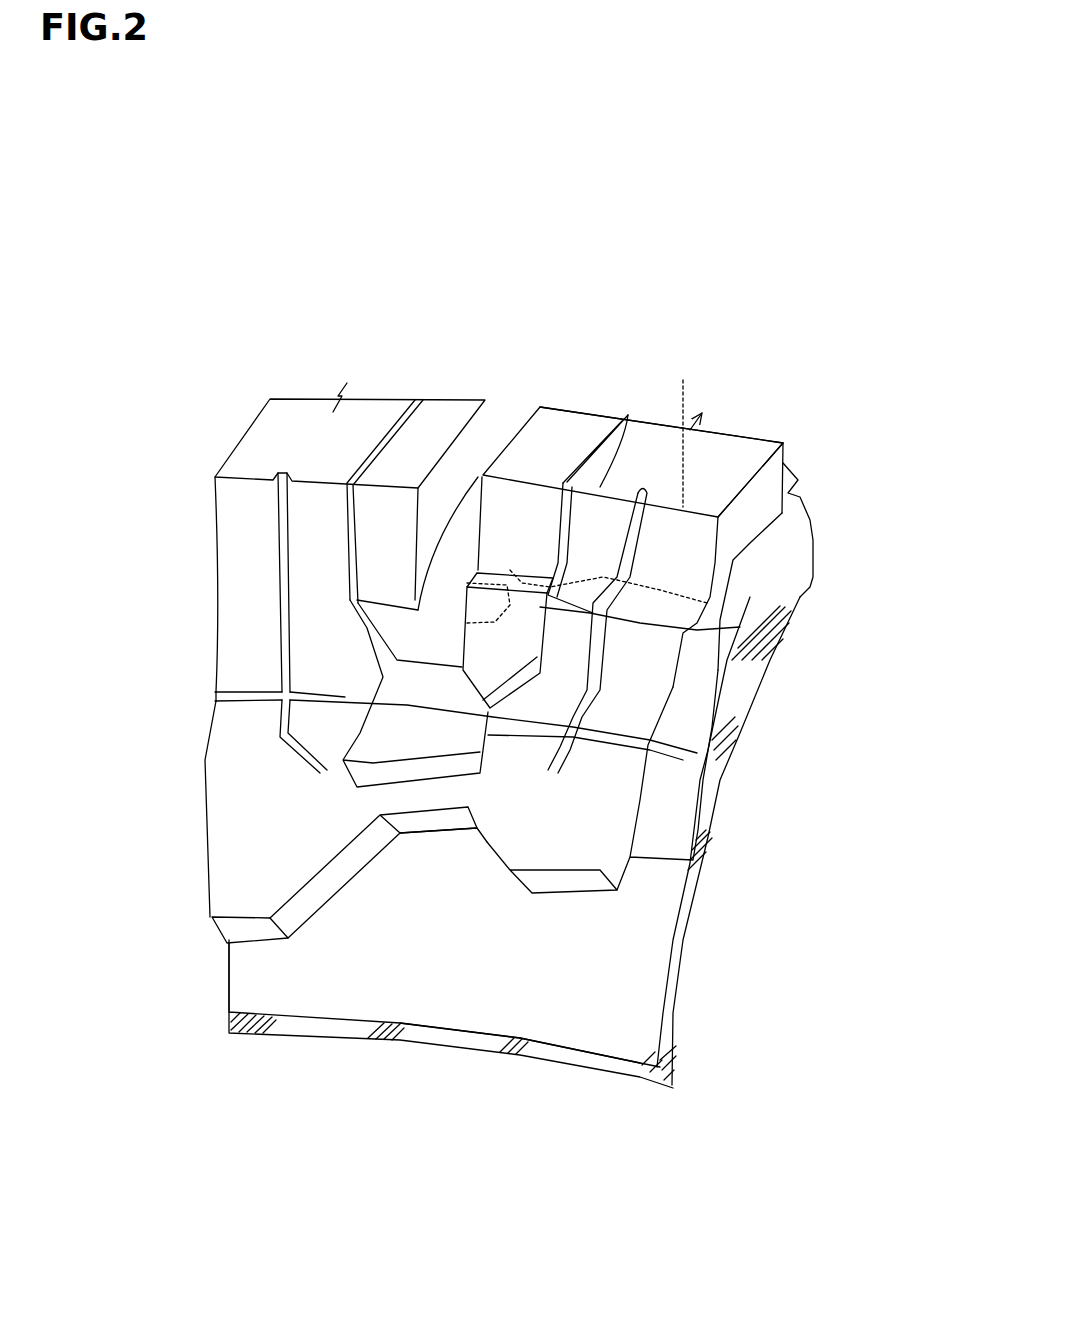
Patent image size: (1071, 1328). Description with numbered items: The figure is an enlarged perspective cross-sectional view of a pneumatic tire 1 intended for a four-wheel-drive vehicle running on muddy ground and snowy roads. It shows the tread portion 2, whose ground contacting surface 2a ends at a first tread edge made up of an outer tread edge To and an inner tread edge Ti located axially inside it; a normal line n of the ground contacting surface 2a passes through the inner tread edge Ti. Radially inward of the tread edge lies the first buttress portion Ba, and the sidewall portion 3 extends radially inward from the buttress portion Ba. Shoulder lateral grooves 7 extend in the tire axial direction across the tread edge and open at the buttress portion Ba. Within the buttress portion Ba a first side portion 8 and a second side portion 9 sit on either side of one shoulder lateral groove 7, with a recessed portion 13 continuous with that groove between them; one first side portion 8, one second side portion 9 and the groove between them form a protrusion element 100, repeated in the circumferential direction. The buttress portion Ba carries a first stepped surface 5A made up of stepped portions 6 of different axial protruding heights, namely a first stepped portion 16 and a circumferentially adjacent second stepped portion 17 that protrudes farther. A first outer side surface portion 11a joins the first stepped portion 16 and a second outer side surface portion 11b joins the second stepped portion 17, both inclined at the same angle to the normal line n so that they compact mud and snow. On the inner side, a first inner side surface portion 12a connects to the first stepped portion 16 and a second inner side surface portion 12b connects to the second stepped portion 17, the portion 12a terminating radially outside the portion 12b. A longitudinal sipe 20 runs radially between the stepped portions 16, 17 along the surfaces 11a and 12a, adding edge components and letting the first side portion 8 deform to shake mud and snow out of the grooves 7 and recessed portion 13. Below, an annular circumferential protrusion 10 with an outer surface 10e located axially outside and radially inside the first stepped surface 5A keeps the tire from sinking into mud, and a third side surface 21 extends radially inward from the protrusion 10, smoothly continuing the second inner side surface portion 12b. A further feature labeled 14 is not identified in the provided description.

The pneumatic tire 1 is at (208, 268).
The protrusion element 100 is at (193, 470).
The outer tread edge To is at (350, 482).
The inner tread edge Ti is at (507, 473).
The tread portion 2 is at (783, 422).
The ground contacting surface 2a is at (710, 470).
The sidewall portion 3 is at (480, 970).
The first stepped surface 5A is at (508, 578).
The stepped portions 6 is at (870, 582).
The shoulder lateral grooves 7 is at (522, 397).
The first side portions 8 is at (567, 937).
The second side portions 9 is at (278, 983).
The circumferential protrusion 10 is at (230, 758).
The outer surface 10e is at (283, 692).
The first outer side surface portions 11a is at (507, 537).
The second outer side surface portions 11b is at (718, 520).
The first inner side surface portions 12a is at (360, 735).
The second inner side surface portions 12b is at (607, 707).
The recessed portion 13 is at (497, 660).
The sipe 14 is at (430, 643).
The first stepped portion 16 is at (650, 613).
The second stepped portion 17 is at (650, 627).
The longitudinal sipe 20 is at (640, 795).
The third side surface 21 is at (567, 840).
The normal line n is at (687, 403).
The first buttress portion Ba is at (712, 895).